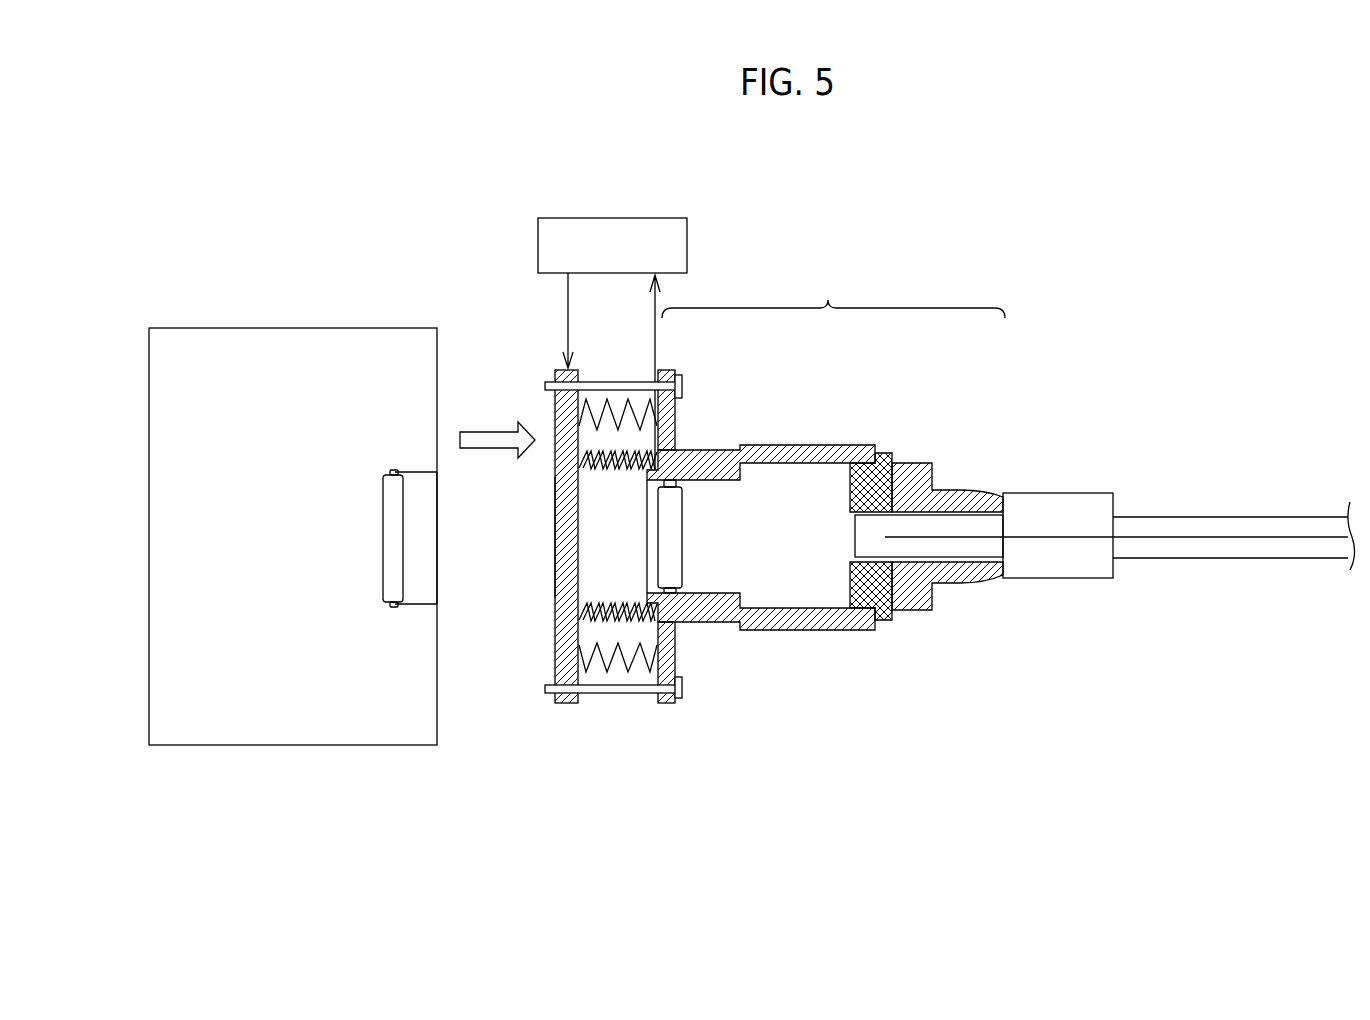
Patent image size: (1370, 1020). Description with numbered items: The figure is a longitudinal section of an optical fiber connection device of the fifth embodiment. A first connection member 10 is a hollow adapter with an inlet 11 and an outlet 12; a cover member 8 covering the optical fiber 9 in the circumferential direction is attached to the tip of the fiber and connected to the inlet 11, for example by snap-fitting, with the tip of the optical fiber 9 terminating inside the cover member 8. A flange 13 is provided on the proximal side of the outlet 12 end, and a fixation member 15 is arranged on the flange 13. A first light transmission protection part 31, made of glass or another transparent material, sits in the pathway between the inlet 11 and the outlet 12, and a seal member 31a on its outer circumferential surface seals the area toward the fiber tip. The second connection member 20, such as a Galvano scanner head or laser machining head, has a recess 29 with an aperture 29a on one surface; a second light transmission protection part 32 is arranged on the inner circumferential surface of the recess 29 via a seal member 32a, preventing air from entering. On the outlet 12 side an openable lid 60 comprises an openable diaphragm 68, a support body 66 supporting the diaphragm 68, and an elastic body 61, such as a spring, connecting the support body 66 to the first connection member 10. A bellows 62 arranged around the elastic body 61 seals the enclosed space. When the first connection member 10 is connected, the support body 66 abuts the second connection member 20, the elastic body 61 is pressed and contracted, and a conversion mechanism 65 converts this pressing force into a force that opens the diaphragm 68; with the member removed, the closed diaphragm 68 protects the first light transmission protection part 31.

The cover member 8 is at (947, 502).
The optical fiber 9 is at (1258, 515).
The first connection member 10 is at (833, 295).
The inlet 11 is at (1005, 505).
The outlet 12 is at (647, 540).
The flange 13 is at (672, 368).
The fixation member 15 is at (682, 385).
The second connection member 20 is at (270, 328).
The recess 29 is at (413, 470).
The aperture 29a is at (438, 547).
The first light transmission protection part 31 is at (730, 457).
The seal member 31a is at (685, 592).
The second light transmission protection part 32 is at (390, 547).
The seal member 32a is at (395, 602).
The openable lid 60 is at (656, 314).
The elastic body 61 is at (615, 453).
The bellows 62 is at (648, 410).
The conversion mechanism 65 is at (690, 247).
The support body 66 is at (555, 658).
The openable diaphragm 68 is at (547, 477).